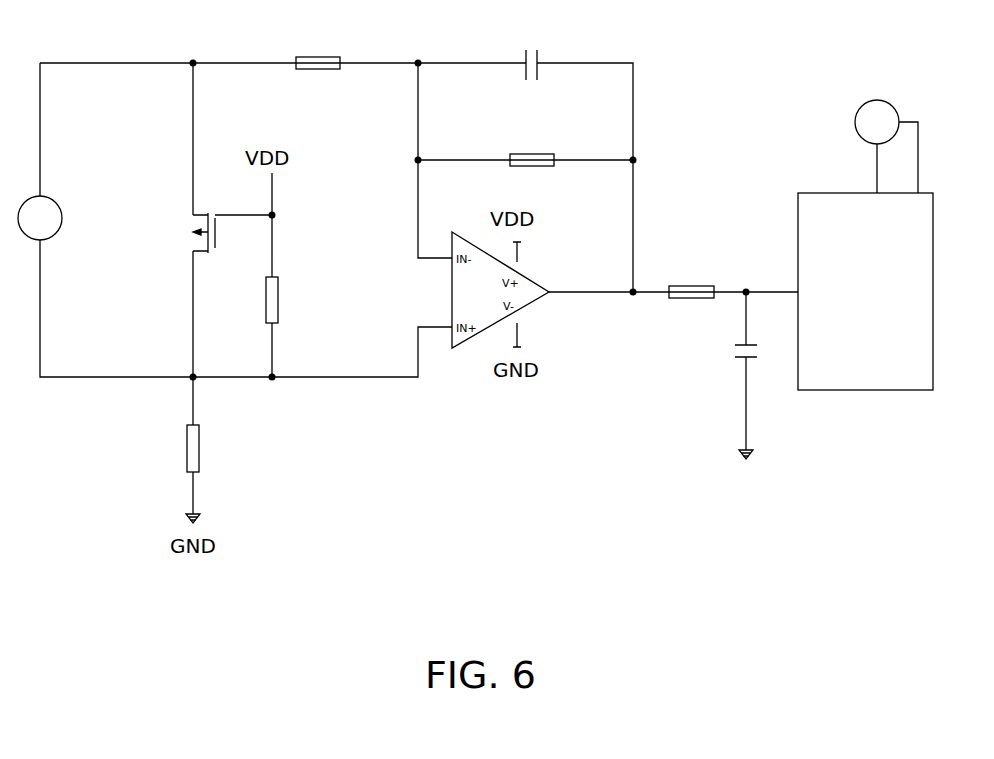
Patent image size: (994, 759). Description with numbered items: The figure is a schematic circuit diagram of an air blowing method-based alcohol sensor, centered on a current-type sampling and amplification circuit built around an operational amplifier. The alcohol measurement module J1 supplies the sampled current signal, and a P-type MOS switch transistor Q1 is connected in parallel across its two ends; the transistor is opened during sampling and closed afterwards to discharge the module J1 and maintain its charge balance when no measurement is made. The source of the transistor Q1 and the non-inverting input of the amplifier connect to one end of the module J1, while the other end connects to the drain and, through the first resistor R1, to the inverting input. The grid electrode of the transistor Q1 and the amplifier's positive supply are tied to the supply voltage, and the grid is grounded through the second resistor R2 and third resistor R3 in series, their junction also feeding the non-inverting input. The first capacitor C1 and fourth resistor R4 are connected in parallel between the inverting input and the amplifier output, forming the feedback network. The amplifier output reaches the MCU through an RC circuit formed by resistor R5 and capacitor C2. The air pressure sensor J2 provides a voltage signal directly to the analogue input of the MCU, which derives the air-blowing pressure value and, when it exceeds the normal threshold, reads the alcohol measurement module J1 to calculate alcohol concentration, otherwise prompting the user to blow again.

The alcohol measurement module J1 is at (40, 218).
The transistor Q1 is at (211, 233).
The first resistor R1 is at (318, 45).
The second resistor R2 is at (255, 300).
The third resistor R3 is at (212, 448).
The fourth resistor R4 is at (532, 146).
The resistor R5 is at (691, 273).
The first capacitor C1 is at (530, 53).
The capacitor C2 is at (728, 351).
The air pressure sensor J2 is at (886, 146).
The MCU processor MCU is at (865, 291).